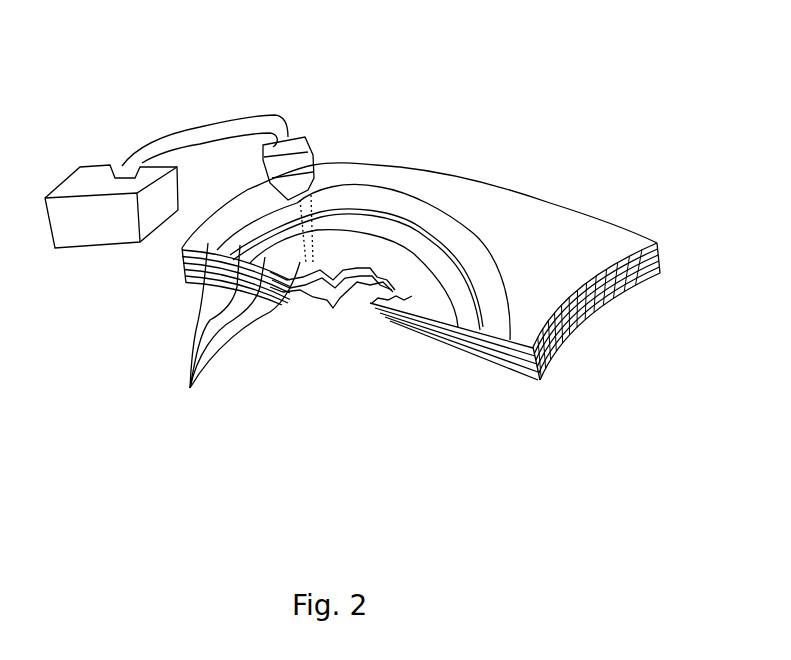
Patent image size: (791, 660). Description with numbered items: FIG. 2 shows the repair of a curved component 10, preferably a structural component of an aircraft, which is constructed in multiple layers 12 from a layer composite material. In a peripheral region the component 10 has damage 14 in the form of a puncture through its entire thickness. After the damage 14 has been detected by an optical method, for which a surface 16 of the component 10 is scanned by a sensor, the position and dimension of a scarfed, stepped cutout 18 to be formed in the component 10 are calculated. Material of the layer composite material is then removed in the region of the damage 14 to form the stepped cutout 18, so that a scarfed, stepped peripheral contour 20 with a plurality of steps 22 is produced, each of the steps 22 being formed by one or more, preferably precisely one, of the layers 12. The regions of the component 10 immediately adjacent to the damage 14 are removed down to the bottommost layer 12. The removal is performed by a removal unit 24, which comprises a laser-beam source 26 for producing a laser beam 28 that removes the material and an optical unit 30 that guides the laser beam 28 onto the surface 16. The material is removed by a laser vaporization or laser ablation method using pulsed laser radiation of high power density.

The component 10 is at (550, 155).
The layers 12 is at (632, 292).
The damage 14 is at (344, 316).
The surface 16 is at (574, 235).
The stepped cutout 18 is at (412, 302).
The peripheral contour 20 is at (474, 334).
The steps 22 is at (239, 333).
The removal unit 24 is at (163, 105).
The laser-beam source 26 is at (97, 228).
The laser beam 28 is at (301, 262).
The optical unit 30 is at (292, 142).